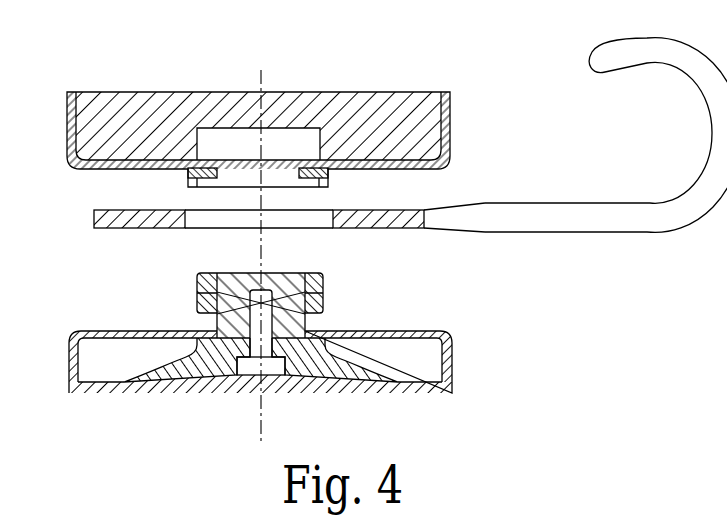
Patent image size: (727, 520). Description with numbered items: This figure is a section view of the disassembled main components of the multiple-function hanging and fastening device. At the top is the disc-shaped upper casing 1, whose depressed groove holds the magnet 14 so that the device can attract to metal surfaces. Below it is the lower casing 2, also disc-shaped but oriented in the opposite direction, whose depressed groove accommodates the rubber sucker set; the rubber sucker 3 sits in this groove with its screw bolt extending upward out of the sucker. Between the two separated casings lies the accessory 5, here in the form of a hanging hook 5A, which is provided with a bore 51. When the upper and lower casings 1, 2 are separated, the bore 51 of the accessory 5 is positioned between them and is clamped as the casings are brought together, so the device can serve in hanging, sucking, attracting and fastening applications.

The upper casing 1 is at (447, 122).
The magnet 14 is at (128, 107).
The lower casing 2 is at (72, 348).
The rubber sucker 3 is at (167, 383).
The accessory 5 is at (560, 200).
The hanging hook 5A is at (490, 222).
The bore 51 is at (290, 218).